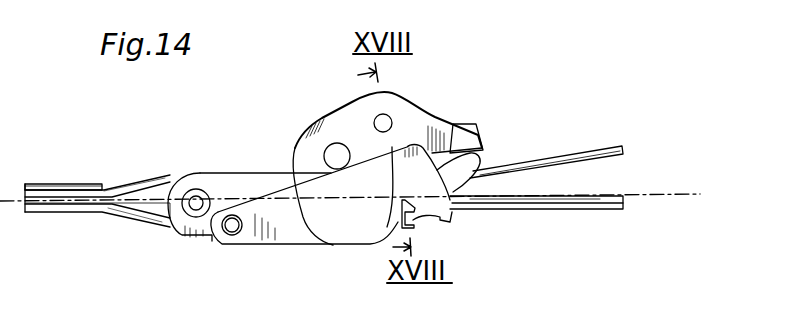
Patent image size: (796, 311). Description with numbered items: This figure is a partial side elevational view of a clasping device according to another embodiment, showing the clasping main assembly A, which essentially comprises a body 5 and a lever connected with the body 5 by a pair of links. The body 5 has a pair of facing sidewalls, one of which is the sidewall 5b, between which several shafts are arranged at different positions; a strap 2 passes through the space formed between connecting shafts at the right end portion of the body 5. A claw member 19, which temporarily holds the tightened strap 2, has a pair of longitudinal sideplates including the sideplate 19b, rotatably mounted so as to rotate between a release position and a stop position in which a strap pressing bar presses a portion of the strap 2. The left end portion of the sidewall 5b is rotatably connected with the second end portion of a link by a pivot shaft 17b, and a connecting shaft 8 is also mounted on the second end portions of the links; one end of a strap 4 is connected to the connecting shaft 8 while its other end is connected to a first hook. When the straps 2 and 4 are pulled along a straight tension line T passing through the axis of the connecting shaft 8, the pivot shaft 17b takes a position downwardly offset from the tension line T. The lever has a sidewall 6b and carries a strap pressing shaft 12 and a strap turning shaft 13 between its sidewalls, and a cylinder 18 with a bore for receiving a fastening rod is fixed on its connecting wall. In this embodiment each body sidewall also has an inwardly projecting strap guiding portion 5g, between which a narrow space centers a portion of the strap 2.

The strap 2 is at (553, 212).
The strap 4 is at (135, 184).
The body 5 is at (367, 243).
The sidewall 5b is at (305, 240).
The strap guiding portion 5g is at (418, 212).
The sidewall 6b is at (363, 140).
The connecting shaft 8 is at (196, 208).
The strap pressing shaft 12 is at (335, 153).
The strap turning shaft 13 is at (384, 122).
The pivot shaft 17b is at (233, 236).
The cylinder 18 is at (475, 123).
The claw member 19 is at (487, 158).
The sideplate 19b is at (460, 177).
The clasping main assembly A is at (335, 106).
The tension line T is at (678, 194).